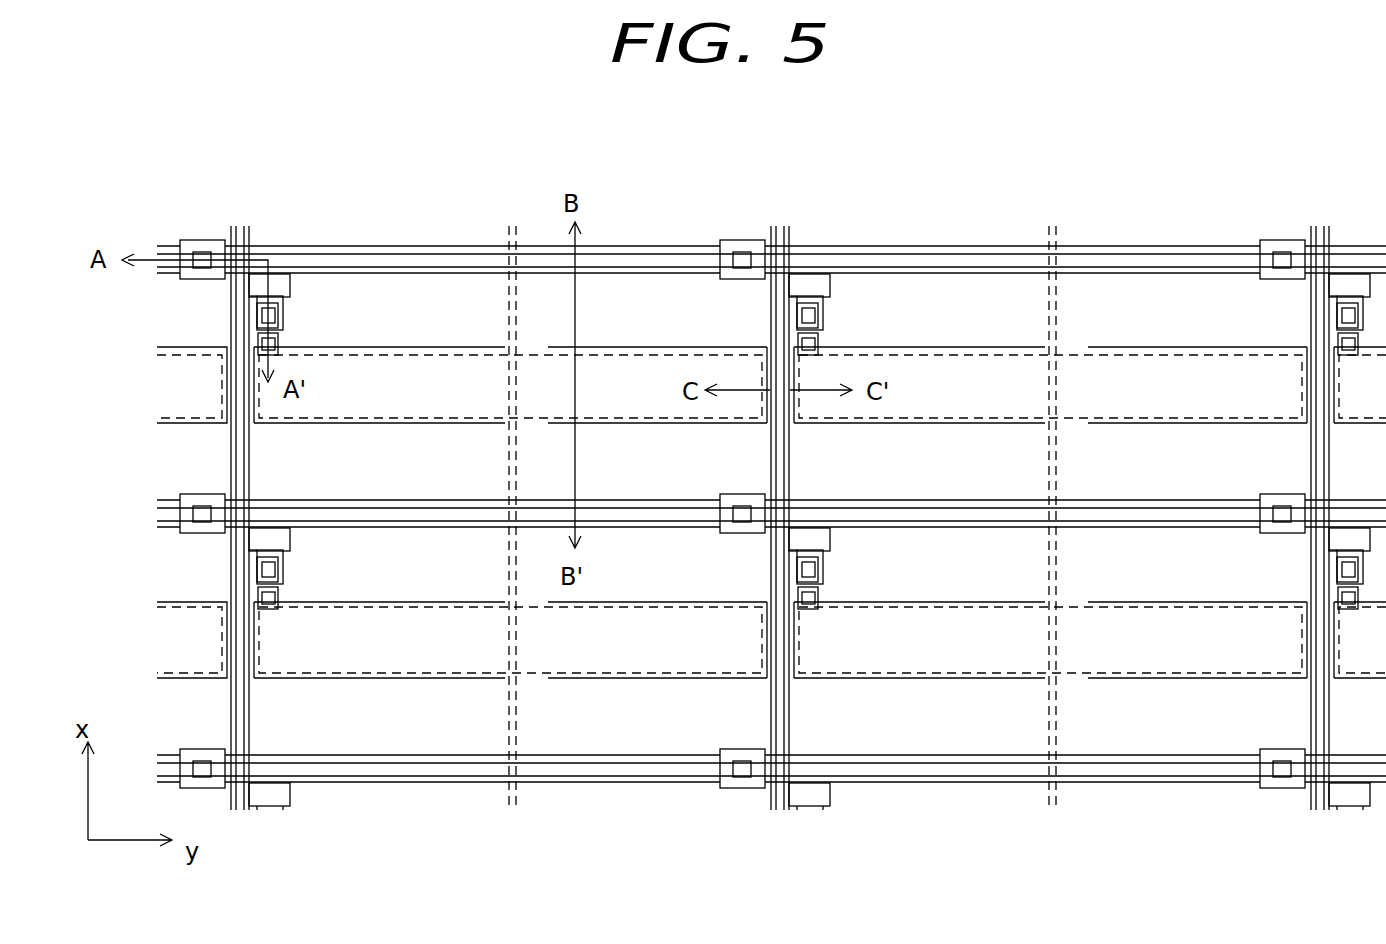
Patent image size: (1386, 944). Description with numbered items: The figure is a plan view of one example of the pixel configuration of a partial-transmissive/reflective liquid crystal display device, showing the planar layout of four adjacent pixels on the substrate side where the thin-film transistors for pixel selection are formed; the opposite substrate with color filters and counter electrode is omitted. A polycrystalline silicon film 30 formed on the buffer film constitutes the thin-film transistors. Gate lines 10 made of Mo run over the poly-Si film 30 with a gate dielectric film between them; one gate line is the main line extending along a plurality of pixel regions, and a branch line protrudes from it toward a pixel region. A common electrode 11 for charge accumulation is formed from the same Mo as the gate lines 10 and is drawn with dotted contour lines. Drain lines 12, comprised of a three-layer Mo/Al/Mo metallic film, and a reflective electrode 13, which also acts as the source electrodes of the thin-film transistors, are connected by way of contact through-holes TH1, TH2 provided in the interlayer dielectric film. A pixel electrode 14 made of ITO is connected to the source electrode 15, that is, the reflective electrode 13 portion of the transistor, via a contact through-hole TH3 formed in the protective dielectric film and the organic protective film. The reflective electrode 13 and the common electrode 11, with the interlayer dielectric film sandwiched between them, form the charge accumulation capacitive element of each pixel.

The gate line 10 is at (229, 246).
The common electrode 11 is at (518, 228).
The drain line 12 is at (1172, 510).
The reflective electrode 13 is at (665, 352).
The pixel electrode 14 is at (441, 265).
The source electrode 15 is at (287, 340).
The polycrystalline silicon film 30 is at (290, 300).
The contact through-hole TH1 is at (202, 253).
The contact through-hole TH2 is at (262, 318).
The contact through-hole TH3 is at (262, 346).